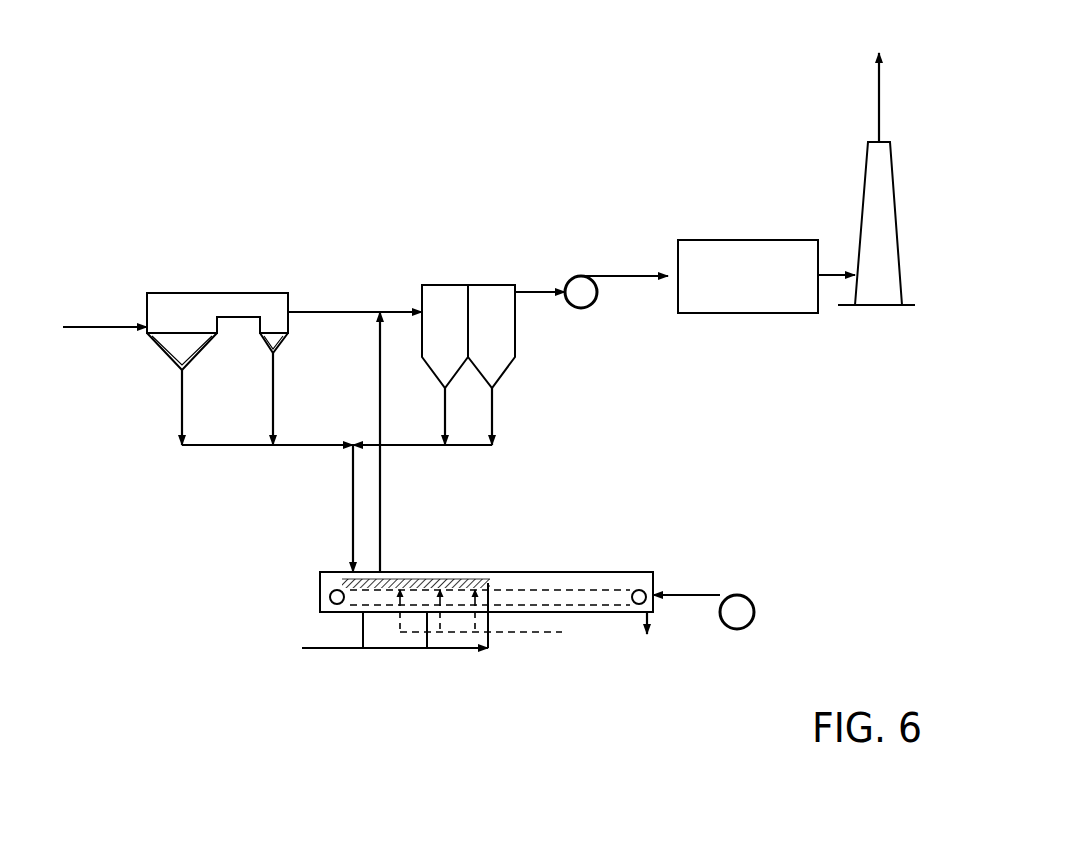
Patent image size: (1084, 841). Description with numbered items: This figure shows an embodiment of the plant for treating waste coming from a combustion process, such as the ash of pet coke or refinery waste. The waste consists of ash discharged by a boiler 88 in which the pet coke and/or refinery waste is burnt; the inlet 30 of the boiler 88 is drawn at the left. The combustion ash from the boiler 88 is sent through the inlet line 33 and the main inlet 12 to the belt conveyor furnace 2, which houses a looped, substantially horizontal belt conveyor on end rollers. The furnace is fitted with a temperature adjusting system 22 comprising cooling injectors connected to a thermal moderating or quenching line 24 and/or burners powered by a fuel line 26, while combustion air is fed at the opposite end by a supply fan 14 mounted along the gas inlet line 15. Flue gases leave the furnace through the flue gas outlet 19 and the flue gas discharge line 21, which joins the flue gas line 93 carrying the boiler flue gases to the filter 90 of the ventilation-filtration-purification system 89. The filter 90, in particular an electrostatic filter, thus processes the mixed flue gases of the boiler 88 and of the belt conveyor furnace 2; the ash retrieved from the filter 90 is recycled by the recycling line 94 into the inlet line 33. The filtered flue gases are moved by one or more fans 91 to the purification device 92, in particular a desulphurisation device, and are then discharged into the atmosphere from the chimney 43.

The dust-laden gas inlet 30 is at (112, 322).
The boiler 88 is at (222, 292).
The flue gas line 93 is at (342, 310).
The flue gas discharge line 21 is at (378, 373).
The ventilation-filtration-purification system 89 is at (428, 270).
The filter 90 is at (492, 295).
The fans 91 is at (577, 284).
The purification device 92 is at (737, 250).
The chimney 43 is at (888, 215).
The recycling line 94 is at (425, 450).
The inlet line 33 is at (350, 500).
The belt conveyor furnace 2 is at (560, 580).
The main inlet 12 is at (340, 578).
The flue gas outlet 19 is at (383, 578).
The temperature adjusting system 22 is at (455, 676).
The fuel line 26 is at (553, 640).
The thermal moderating or quenching line 24 is at (340, 652).
The gas inlet line 15 is at (718, 594).
The supply fan 14 is at (740, 610).